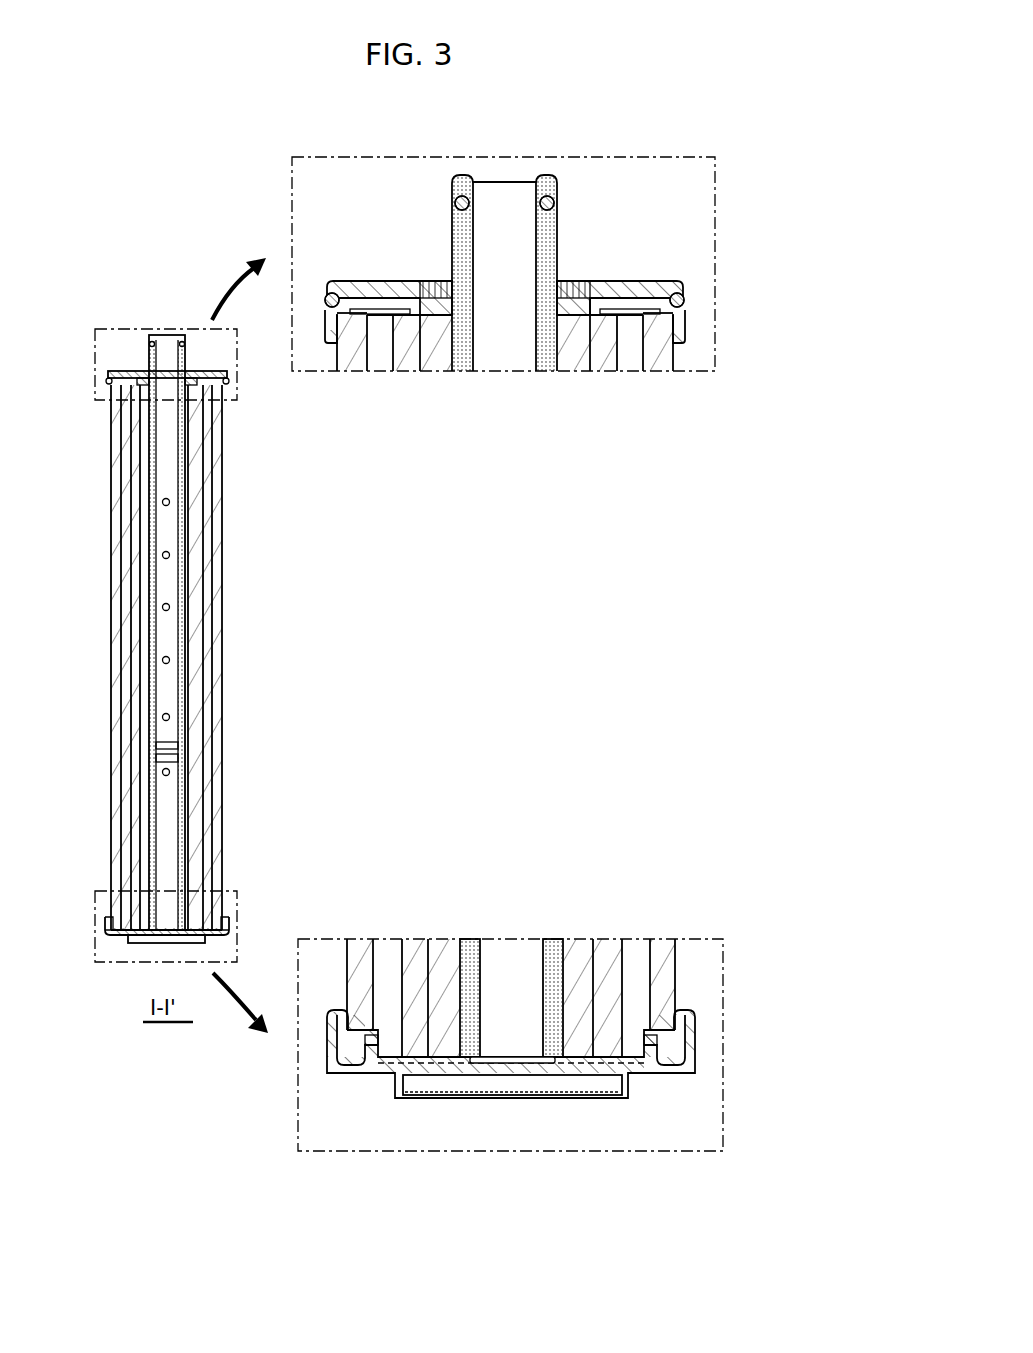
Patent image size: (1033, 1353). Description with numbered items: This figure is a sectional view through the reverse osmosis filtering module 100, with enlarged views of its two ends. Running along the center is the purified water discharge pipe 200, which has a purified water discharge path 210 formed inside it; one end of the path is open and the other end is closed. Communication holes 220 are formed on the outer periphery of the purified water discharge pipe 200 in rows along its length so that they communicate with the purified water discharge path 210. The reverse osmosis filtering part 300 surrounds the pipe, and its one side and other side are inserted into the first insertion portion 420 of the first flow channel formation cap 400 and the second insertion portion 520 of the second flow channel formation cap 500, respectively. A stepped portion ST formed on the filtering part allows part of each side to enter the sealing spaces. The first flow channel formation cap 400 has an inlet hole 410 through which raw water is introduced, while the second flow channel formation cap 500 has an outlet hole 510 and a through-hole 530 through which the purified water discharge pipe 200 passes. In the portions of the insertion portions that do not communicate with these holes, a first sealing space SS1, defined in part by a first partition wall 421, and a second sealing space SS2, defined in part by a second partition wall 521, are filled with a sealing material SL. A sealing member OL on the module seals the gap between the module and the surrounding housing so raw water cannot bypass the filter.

The reverse osmosis filtering module 100 is at (188, 203).
The purified water discharge pipe 200 is at (190, 557).
The purified water discharge path 210 is at (164, 572).
The communication hole 220 is at (169, 500).
The reverse osmosis filtering part 300 is at (228, 660).
The first flow channel formation cap 400 is at (116, 946).
The inlet hole 410 is at (345, 1045).
The first insertion portion 420 is at (668, 1016).
The first partition wall 421 is at (657, 1046).
The second flow channel formation cap 500 is at (128, 360).
The outlet hole 510 is at (615, 278).
The second insertion portion 520 is at (669, 325).
The second partition wall 521 is at (593, 318).
The through-hole 530 is at (450, 258).
The sealing member OL is at (106, 381).
The stepped portion ST is at (366, 318).
The sealing material SL is at (412, 314).
The first sealing space SS1 is at (442, 1048).
The second sealing space SS2 is at (627, 320).